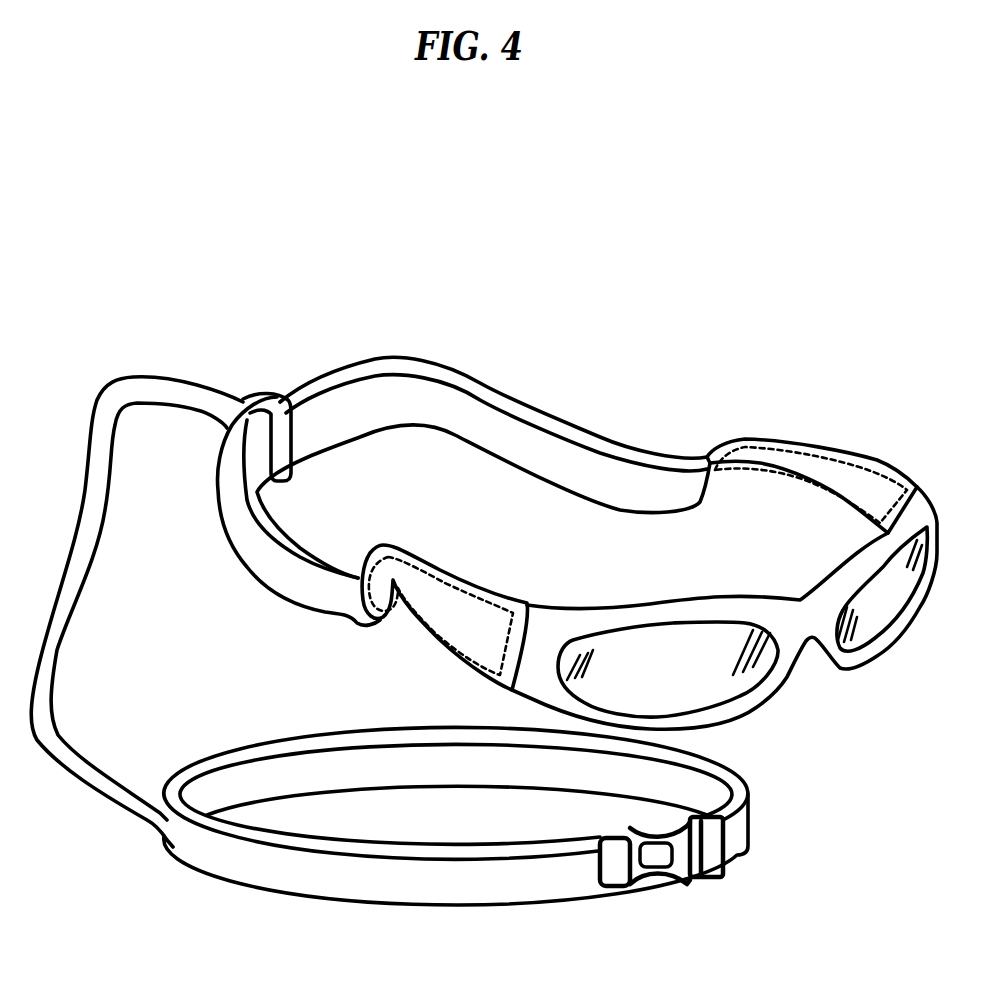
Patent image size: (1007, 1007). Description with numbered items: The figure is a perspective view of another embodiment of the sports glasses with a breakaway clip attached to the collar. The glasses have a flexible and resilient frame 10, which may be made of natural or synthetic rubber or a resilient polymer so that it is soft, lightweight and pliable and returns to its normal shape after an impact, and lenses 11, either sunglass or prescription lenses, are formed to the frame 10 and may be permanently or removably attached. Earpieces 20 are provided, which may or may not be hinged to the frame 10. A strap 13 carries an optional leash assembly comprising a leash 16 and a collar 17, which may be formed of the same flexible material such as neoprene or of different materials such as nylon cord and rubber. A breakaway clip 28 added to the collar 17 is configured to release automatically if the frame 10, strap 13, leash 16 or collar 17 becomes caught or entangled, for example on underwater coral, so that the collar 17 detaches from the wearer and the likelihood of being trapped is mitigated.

The frame 10 is at (787, 591).
The lenses 11 is at (693, 675).
The strap 13 is at (444, 341).
The leash 16 is at (102, 574).
The collar 17 is at (768, 827).
The earpieces 20 is at (807, 422).
The breakaway clip 28 is at (687, 903).